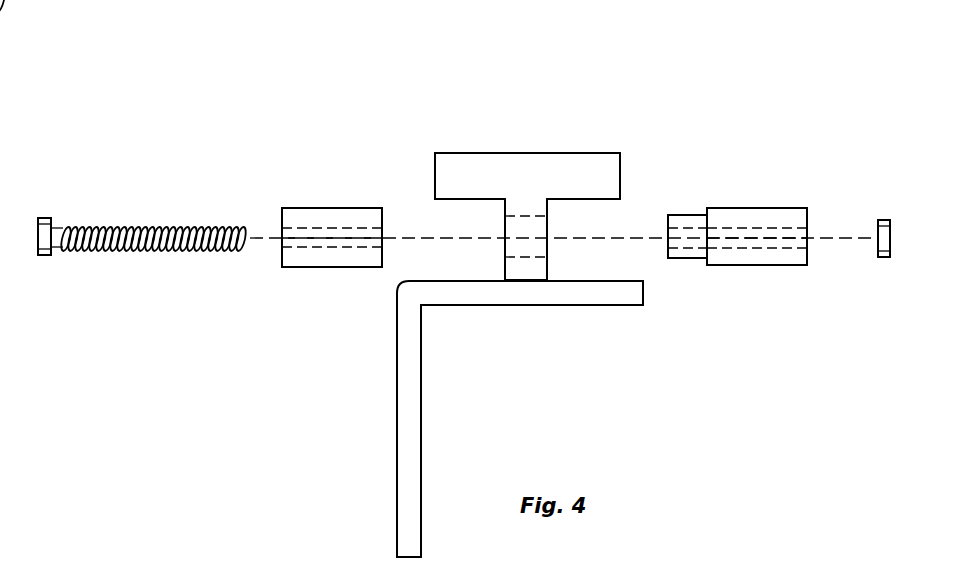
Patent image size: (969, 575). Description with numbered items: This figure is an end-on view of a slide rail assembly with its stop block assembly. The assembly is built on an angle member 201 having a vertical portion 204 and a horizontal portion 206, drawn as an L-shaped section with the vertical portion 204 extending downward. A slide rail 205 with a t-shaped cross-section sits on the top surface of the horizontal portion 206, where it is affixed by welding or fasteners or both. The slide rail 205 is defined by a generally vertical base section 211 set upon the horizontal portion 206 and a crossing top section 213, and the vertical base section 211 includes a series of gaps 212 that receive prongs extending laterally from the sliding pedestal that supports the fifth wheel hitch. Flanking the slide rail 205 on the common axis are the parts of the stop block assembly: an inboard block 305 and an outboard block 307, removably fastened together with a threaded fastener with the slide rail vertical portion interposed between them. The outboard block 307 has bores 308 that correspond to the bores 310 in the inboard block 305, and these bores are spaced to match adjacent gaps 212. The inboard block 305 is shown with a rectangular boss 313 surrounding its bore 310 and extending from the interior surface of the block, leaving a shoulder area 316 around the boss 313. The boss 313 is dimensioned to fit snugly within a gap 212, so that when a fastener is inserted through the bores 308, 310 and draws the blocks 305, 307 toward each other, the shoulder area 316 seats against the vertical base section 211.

The angle member 201 is at (520, 419).
The vertical portion 204 is at (322, 425).
The slide rail 205 is at (556, 184).
The horizontal portion 206 is at (532, 319).
The vertical base section 211 is at (535, 265).
The gaps 212 is at (487, 248).
The crossing top section 213 is at (527, 93).
The inboard block 305 is at (800, 271).
The outboard block 307 is at (312, 288).
The bores 308 is at (323, 192).
The bores 310 is at (788, 188).
The rectangular boss 313 is at (702, 292).
The shoulder area 316 is at (739, 213).